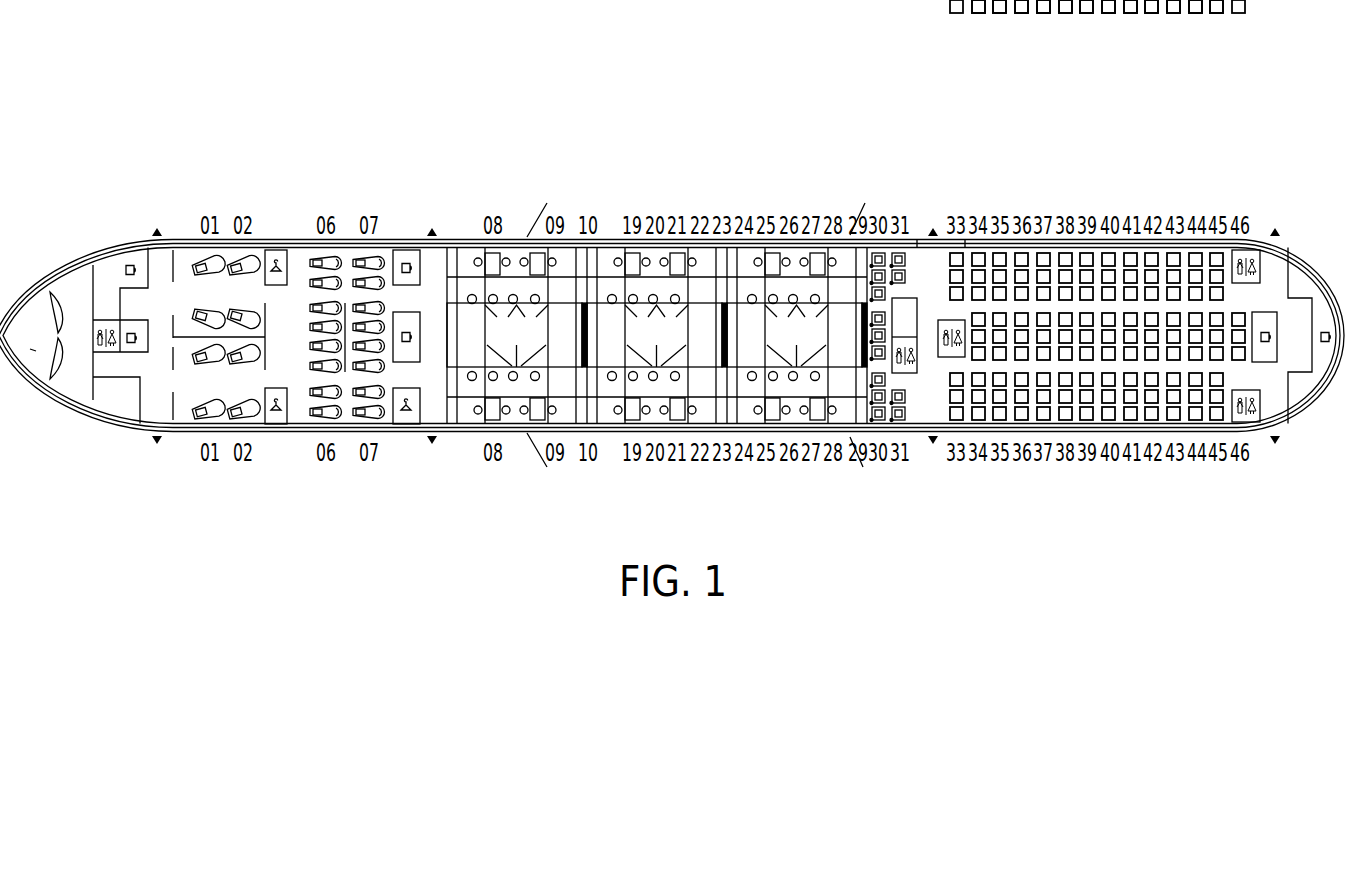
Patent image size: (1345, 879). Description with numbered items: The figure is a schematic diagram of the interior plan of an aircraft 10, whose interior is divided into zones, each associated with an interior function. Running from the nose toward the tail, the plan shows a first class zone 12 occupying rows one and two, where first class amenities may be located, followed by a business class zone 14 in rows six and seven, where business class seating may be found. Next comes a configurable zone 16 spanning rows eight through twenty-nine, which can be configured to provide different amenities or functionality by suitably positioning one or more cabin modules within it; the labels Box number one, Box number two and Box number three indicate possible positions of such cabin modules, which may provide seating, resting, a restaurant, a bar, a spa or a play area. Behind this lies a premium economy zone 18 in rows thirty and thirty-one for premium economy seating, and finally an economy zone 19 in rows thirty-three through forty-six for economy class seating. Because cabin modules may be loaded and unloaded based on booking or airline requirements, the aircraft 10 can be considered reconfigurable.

The aircraft 10 is at (266, 86).
The first class zone 12 is at (263, 189).
The business class zone 14 is at (300, 189).
The configurable zone 16 is at (453, 189).
The premium economy zone 18 is at (868, 189).
The economy zone 19 is at (1270, 189).